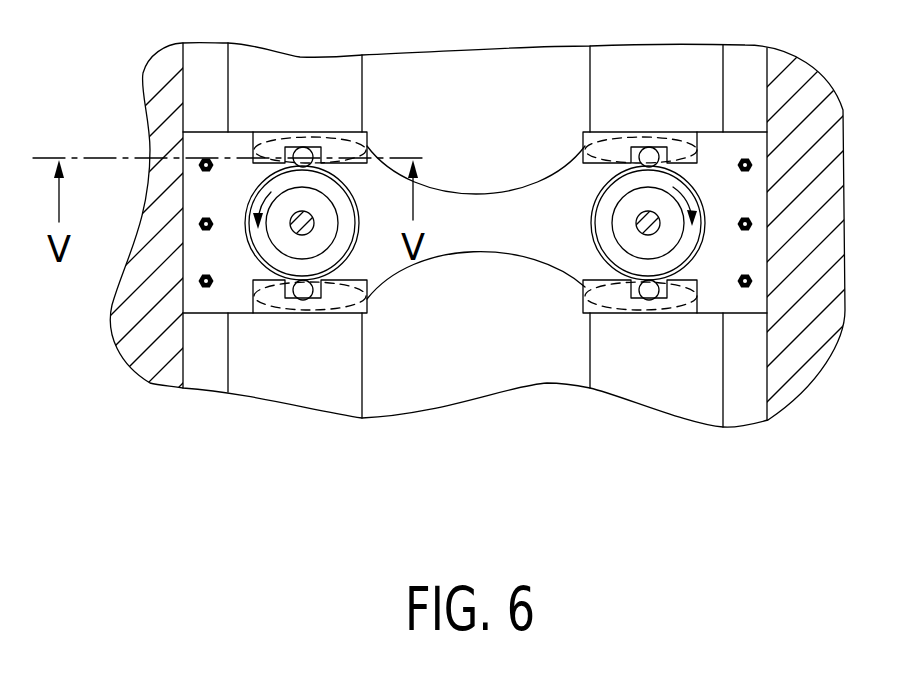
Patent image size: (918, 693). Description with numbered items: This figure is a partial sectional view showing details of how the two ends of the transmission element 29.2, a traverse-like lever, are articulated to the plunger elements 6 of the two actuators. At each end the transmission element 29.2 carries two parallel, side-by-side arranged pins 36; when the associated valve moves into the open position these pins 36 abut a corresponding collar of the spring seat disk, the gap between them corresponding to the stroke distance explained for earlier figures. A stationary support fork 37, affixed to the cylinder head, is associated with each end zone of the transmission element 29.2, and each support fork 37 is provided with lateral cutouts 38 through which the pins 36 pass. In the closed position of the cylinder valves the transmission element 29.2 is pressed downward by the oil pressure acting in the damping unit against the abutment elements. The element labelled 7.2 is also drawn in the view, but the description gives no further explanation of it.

The plunger element 6 is at (300, 220).
The direction of rotation 7.2 is at (673, 187).
The transmission element 29.2 is at (528, 247).
The pins 36 is at (646, 150).
The support fork 37 is at (718, 287).
The lateral cutouts 38 is at (641, 302).